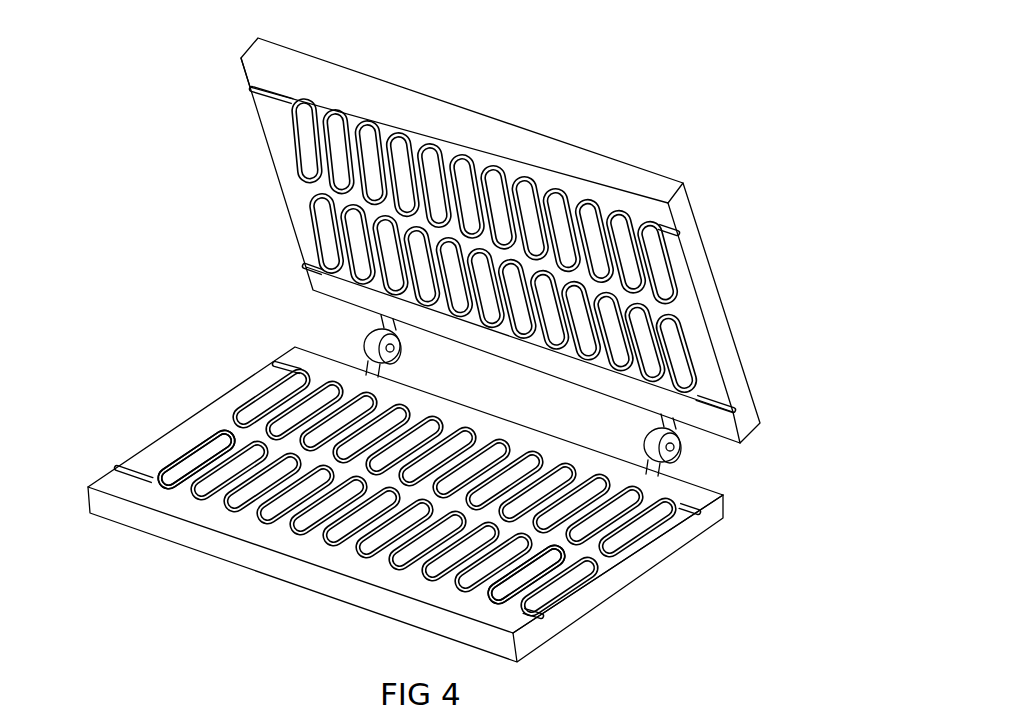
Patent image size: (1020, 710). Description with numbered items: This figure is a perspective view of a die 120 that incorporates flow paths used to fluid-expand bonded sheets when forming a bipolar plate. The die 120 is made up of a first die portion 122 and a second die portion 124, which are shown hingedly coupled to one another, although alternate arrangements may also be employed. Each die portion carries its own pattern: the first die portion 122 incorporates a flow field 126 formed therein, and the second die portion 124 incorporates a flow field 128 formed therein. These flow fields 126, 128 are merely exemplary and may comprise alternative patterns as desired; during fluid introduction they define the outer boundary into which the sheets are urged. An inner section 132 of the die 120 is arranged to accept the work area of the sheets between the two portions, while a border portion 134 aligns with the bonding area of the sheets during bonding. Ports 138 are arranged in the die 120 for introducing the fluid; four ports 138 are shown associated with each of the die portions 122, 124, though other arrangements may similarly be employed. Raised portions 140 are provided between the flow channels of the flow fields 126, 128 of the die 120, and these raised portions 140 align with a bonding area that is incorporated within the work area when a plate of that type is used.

The die 120 is at (703, 97).
The first die portion 122 is at (470, 240).
The second die portion 124 is at (405, 470).
The flow field 126 is at (297, 184).
The flow field 128 is at (230, 437).
The inner section 132 is at (571, 534).
The border portion 134 is at (690, 480).
The ports 138 is at (252, 90).
The raised portions 140 is at (250, 492).